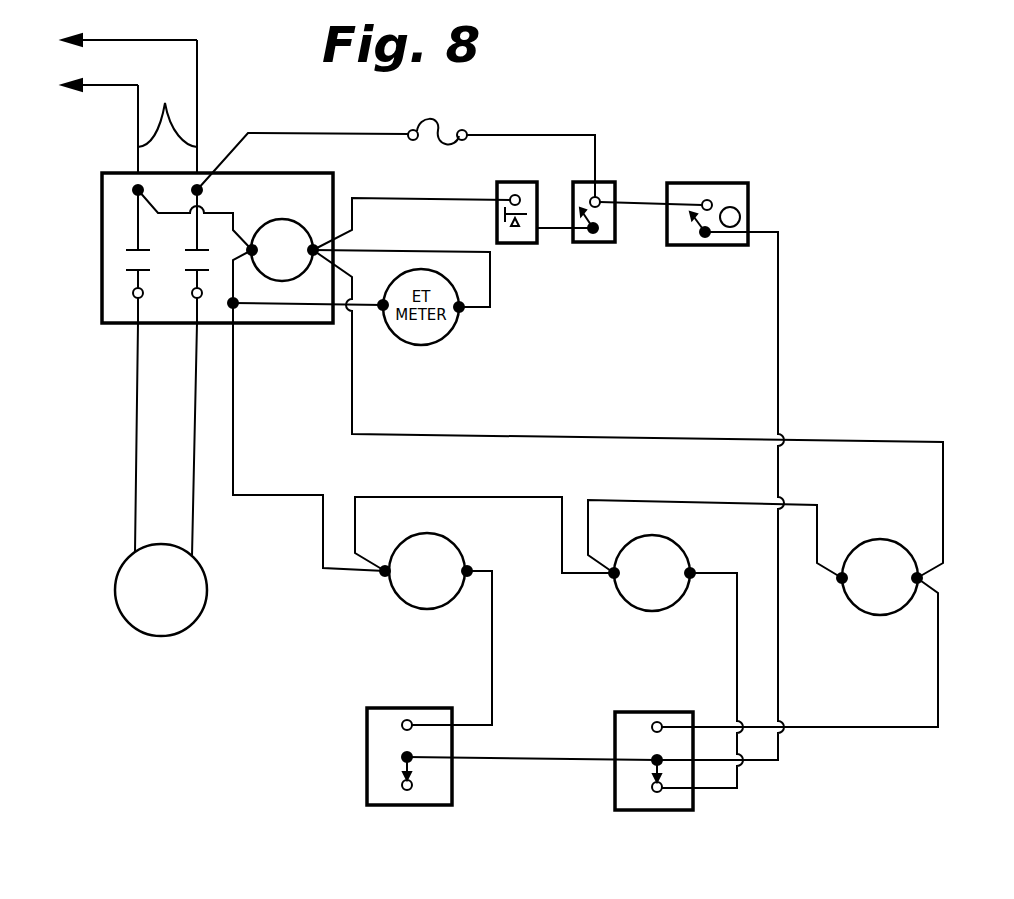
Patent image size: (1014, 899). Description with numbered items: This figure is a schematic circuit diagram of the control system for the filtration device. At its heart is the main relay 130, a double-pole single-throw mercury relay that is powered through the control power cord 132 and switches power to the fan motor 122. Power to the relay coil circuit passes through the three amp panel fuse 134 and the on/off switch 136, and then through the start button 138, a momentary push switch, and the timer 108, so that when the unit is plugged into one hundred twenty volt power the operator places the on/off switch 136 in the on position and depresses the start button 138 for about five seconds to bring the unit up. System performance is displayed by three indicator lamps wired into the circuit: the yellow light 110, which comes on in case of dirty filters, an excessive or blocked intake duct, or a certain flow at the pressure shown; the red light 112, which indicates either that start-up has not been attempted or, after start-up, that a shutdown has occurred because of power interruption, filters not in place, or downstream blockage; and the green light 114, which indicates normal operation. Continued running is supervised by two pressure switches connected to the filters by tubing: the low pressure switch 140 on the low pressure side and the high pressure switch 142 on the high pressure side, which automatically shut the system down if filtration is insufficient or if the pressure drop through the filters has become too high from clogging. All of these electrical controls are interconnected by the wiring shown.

The timer 108 is at (725, 186).
The yellow light 110 is at (416, 597).
The red light 112 is at (633, 598).
The green light 114 is at (883, 604).
The fan motor 122 is at (197, 606).
The main relay 130 is at (102, 290).
The control power cord 132 is at (121, 103).
The panel fuse 134 is at (441, 122).
The on/off switch 136 is at (612, 178).
The start button 138 is at (511, 182).
The low pressure switch 140 is at (620, 795).
The high pressure switch 142 is at (373, 789).